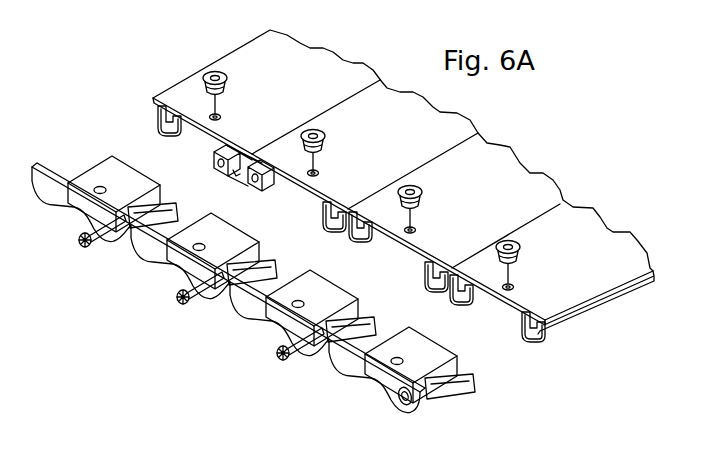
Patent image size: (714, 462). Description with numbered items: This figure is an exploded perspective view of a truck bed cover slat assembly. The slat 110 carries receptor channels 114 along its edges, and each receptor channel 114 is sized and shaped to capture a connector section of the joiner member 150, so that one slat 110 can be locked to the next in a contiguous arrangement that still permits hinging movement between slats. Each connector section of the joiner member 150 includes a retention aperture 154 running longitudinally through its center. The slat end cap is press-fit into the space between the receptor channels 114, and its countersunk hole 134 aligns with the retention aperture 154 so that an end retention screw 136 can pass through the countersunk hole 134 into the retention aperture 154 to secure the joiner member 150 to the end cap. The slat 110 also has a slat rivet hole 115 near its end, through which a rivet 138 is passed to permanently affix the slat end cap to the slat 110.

The slat 110 is at (223, 47).
The rivet 138 is at (202, 77).
The slat rivet hole 115 is at (512, 290).
The receptor channel 114 is at (428, 274).
The retention aperture 154 is at (213, 157).
The joiner member 150 is at (240, 172).
The countersunk hole 134 is at (397, 400).
The end retention screw 136 is at (183, 305).